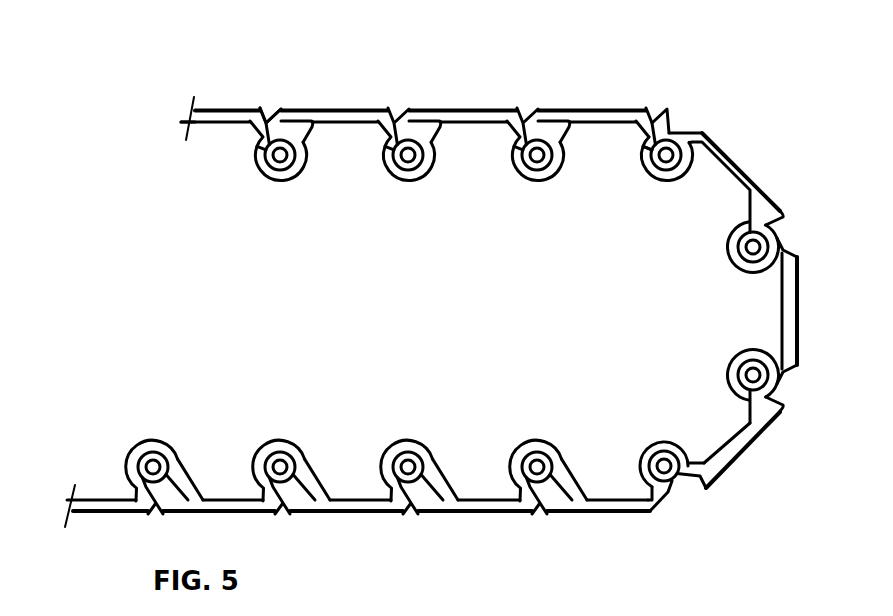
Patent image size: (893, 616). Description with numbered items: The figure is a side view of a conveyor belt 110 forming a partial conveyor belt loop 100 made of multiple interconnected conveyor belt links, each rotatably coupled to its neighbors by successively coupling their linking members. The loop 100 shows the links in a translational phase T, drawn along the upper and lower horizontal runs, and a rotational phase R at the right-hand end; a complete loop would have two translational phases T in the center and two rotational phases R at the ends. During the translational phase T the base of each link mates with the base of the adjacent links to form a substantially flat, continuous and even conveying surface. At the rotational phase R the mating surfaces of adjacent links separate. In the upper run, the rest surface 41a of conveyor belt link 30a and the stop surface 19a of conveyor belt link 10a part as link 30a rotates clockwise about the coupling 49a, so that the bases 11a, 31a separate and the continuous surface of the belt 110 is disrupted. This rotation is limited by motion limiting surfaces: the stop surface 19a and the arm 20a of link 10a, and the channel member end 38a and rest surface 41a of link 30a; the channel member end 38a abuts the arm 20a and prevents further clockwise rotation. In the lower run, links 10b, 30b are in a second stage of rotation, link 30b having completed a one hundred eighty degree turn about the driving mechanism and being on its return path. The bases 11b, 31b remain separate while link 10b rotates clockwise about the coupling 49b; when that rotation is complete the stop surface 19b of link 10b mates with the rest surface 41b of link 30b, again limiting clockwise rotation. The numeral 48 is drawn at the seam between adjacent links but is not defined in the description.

The partial conveyor belt loop 100 is at (450, 293).
The conveyor belt 110 is at (223, 108).
The notch / seam 48 is at (263, 110).
The conveyor belt link 10a is at (416, 86).
The base 11a is at (603, 112).
The stop surface 19a is at (668, 107).
The rest surface 41a is at (689, 128).
The adjacent conveyor belt link 30a is at (737, 152).
The base 31a is at (739, 170).
The arm 20a is at (640, 136).
The channel member end 38a is at (647, 153).
The coupling 49a is at (641, 154).
The coupling 49b is at (663, 436).
The base 11b is at (742, 452).
The conveyor belt link 10b is at (740, 475).
The stop surface 19b is at (690, 502).
The rest surface 41b is at (668, 504).
The base 31b is at (359, 538).
The adjacent conveyor belt link 30b is at (600, 525).
The translational phase T is at (380, 242).
The rotational phase R is at (781, 322).